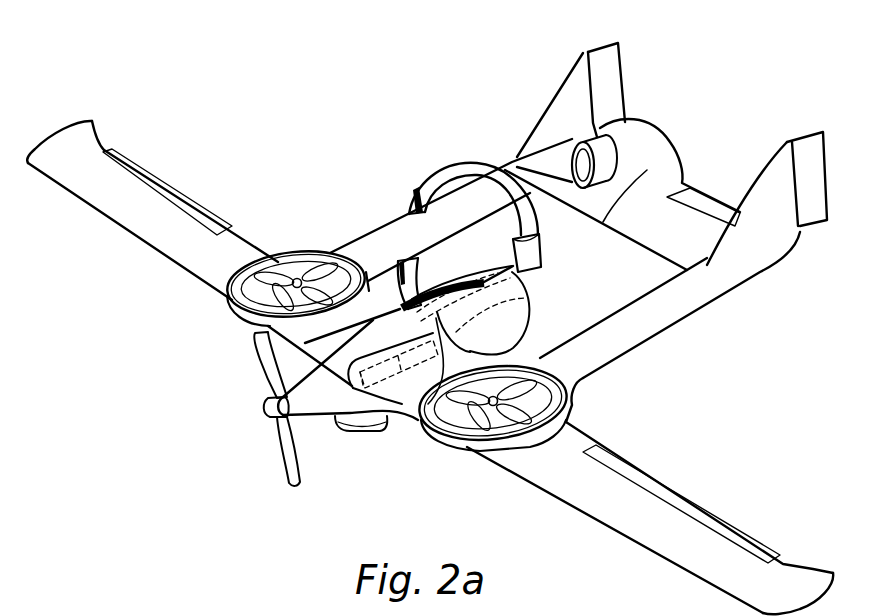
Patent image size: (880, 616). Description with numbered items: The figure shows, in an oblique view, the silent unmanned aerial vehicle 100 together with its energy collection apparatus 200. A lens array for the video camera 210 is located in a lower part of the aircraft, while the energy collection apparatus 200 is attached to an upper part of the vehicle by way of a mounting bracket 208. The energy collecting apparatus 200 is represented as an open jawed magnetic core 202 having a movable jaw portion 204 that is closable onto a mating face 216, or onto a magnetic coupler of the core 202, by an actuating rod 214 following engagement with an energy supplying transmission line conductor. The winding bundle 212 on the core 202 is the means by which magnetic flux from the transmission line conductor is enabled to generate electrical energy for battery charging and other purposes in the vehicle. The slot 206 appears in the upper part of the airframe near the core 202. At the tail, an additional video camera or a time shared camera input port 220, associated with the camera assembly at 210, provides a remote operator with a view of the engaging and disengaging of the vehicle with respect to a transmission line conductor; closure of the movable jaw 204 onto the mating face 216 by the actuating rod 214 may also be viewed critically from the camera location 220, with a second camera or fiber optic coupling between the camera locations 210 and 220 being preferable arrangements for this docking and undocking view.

The silent unmanned aerial vehicle 100 is at (247, 128).
The energy collection apparatus 200 is at (468, 124).
The open jawed magnetic core 202 is at (428, 180).
The movable jaw portion 204 is at (410, 257).
The slot 206 is at (482, 287).
The mounting bracket 208 is at (510, 350).
The lens array for the video camera 210 is at (360, 434).
The winding bundle 212 is at (534, 257).
The actuating rod 214 is at (414, 392).
The mating face 216 is at (406, 213).
The additional video camera 220 is at (588, 136).